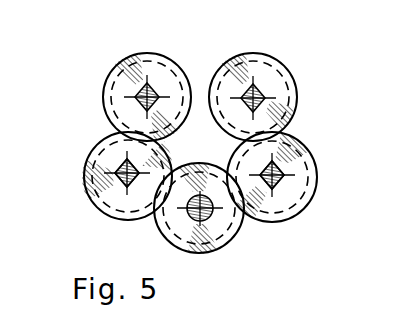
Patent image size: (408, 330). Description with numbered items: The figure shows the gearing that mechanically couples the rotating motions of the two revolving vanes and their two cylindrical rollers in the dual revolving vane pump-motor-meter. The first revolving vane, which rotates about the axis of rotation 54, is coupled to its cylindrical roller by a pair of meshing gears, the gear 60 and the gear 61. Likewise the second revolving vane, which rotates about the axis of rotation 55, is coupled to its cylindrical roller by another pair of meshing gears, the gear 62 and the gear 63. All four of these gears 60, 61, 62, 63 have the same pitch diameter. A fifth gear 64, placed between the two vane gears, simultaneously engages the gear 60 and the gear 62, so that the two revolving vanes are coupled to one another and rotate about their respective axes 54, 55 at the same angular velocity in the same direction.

The axis of rotation 54 is at (125, 164).
The axis of rotation 55 is at (283, 170).
The gear 60 is at (84, 200).
The gear 61 is at (152, 51).
The gear 62 is at (313, 198).
The gear 63 is at (256, 51).
The gear 64 is at (235, 243).